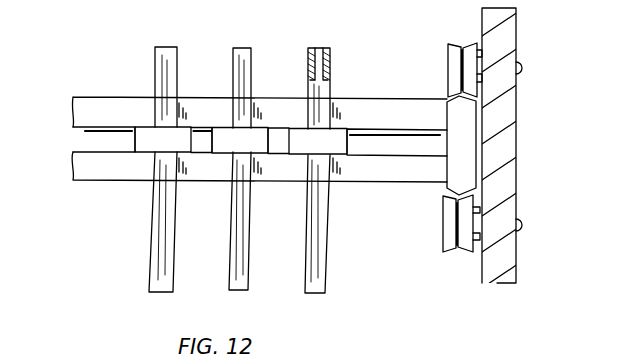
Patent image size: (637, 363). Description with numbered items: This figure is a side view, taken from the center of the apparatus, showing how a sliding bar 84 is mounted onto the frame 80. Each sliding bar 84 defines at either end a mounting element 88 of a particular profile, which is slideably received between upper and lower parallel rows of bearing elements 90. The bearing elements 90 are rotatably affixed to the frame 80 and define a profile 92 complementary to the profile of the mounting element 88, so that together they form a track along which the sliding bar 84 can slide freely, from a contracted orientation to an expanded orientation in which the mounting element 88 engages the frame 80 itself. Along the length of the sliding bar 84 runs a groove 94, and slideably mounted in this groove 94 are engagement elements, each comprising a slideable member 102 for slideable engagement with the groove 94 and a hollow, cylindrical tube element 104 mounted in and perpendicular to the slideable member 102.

The frame 80 is at (480, 268).
The sliding bar 84 is at (367, 178).
The mounting element 88 is at (457, 170).
The bearing element 90 is at (443, 228).
The profile 92 is at (454, 43).
The groove 94 is at (82, 142).
The slideable member 102 is at (348, 146).
The tube element 104 is at (305, 82).